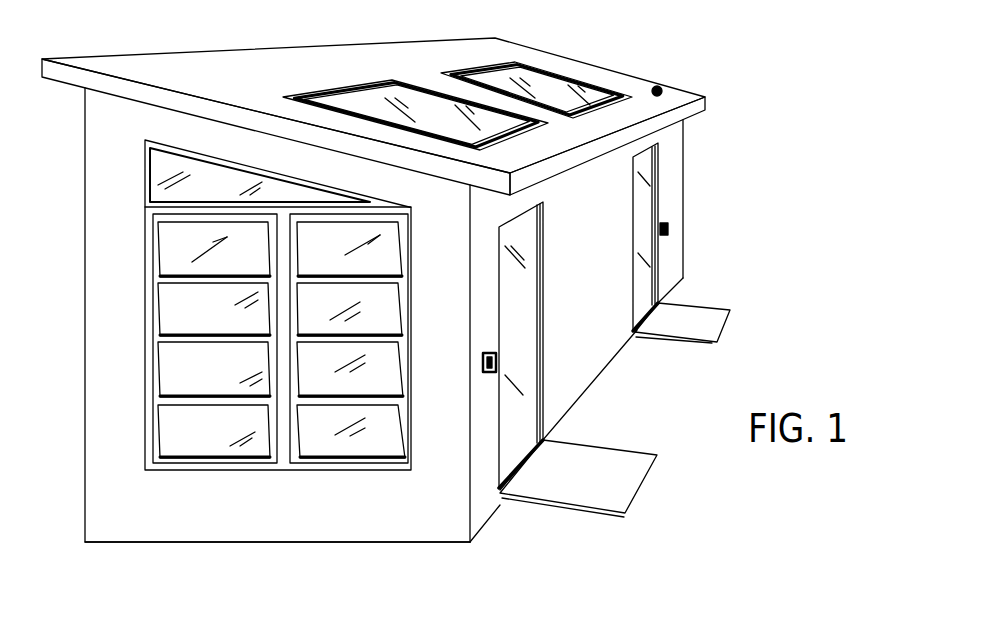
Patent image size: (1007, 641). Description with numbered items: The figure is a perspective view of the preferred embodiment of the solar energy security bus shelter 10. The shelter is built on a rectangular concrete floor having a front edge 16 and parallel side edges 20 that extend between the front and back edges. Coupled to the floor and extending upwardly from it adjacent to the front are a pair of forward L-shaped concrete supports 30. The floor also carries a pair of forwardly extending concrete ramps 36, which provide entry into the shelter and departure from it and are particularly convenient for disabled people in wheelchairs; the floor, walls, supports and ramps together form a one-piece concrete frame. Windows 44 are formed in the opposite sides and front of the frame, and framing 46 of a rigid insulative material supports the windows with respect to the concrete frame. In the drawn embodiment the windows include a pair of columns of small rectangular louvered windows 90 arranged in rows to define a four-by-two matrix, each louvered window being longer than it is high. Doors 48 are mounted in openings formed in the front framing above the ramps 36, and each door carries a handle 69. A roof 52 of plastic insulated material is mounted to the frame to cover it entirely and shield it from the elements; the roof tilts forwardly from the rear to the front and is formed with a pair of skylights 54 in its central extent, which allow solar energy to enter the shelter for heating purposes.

The solar energy security bus shelter 10 is at (373, 322).
The front edge 16 is at (483, 530).
The side edges 20 is at (358, 531).
The forward L-shaped concrete supports 30 is at (447, 520).
The forwardly extending concrete ramps 36 is at (697, 317).
The windows 44 is at (322, 457).
The framing 46 is at (305, 528).
The doors 48 is at (645, 207).
The roof 52 is at (473, 55).
The skylights 54 is at (557, 73).
The door handle 69 is at (668, 231).
The small rectangular louvered windows 90 is at (225, 386).